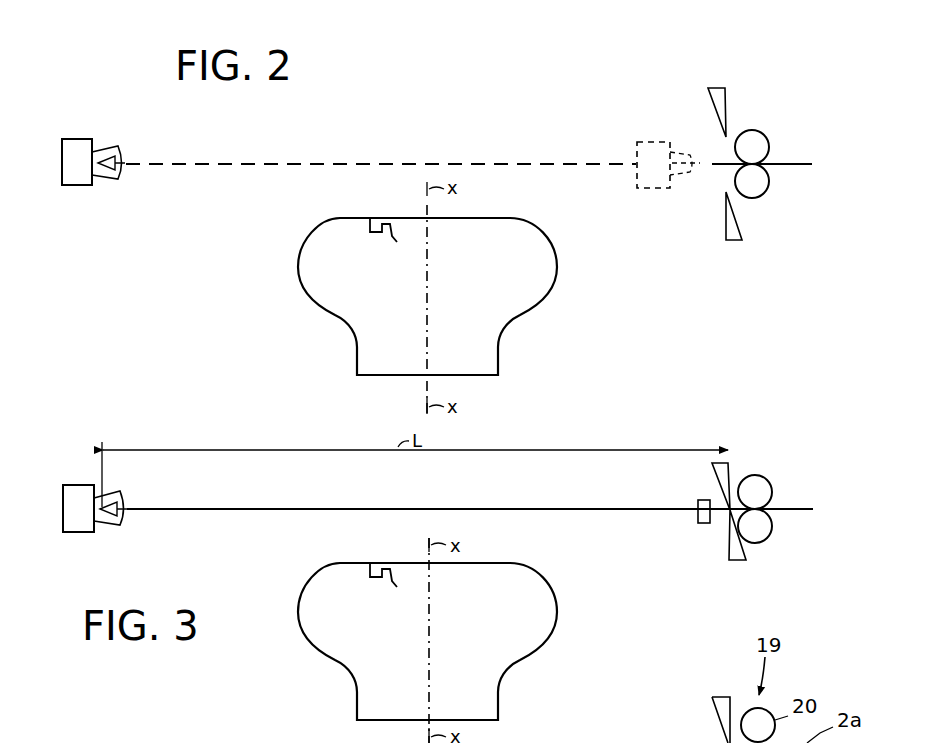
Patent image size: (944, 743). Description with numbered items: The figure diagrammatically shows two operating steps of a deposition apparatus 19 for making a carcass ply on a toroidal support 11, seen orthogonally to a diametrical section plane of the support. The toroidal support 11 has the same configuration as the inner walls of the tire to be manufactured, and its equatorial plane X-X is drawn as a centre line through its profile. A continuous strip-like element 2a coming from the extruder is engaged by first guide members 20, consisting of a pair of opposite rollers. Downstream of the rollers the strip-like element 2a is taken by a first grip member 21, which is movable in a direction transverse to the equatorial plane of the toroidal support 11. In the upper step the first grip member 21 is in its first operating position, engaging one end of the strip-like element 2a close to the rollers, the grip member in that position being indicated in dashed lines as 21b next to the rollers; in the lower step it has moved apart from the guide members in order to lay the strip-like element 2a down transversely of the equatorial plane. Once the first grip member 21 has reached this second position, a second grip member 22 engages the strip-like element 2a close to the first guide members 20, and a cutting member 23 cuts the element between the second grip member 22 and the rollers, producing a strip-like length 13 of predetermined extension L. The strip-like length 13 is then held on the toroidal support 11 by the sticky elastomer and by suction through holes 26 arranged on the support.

In FIG. 2, the toroidal support 11 is at (548, 299).
In FIG. 3, the toroidal support 11 is at (548, 644).
In FIG. 2, the strip-like length 13 is at (462, 156).
In FIG. 3, the strip-like length 13 is at (573, 513).
In FIG. 2, the deposition apparatus 19 is at (748, 90).
In FIG. 3, the deposition apparatus 19 is at (760, 463).
In FIG. 2, the first guide members 20 is at (763, 133).
In FIG. 3, the first guide members 20 is at (768, 482).
In FIG. 2, the first grip member 21 is at (76, 186).
In FIG. 3, the first grip member 21 is at (74, 485).
In FIG. 2, the receiver unit (dashed) 21b is at (647, 140).
In FIG. 3, the second grip member 22 is at (702, 526).
In FIG. 2, the cutting member 23 is at (718, 86).
In FIG. 3, the cutting member 23 is at (731, 470).
In FIG. 2, the holes 26 is at (391, 247).
In FIG. 3, the holes 26 is at (391, 592).
In FIG. 2, the continuous strip-like element 2a is at (800, 163).
In FIG. 3, the continuous strip-like element 2a is at (800, 509).